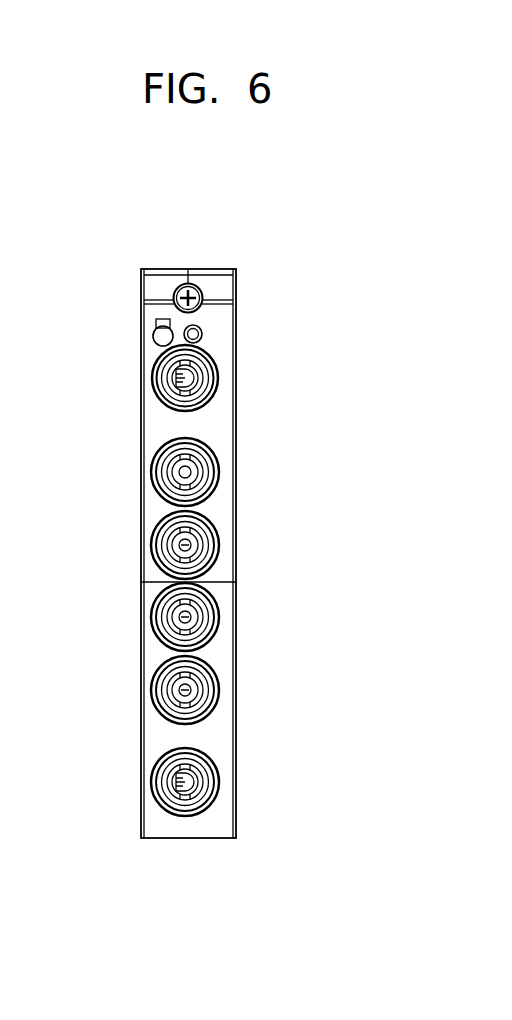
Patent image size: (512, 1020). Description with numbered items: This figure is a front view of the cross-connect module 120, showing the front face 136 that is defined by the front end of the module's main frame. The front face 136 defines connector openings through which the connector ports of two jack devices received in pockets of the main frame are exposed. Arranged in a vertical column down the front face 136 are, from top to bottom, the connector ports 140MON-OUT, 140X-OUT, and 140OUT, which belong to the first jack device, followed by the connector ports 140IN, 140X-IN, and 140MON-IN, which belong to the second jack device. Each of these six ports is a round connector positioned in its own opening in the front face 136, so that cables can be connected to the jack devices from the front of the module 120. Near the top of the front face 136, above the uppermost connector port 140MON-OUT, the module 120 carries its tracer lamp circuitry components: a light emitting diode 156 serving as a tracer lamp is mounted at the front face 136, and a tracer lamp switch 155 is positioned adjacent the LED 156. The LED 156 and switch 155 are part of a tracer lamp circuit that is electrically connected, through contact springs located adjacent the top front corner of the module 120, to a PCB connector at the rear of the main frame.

The cross-connect module 120 is at (243, 253).
The front face 136 is at (215, 738).
The tracer lamp switch 155 is at (162, 335).
The light emitting diode 156 is at (203, 333).
The connector port 140MON-OUT is at (196, 378).
The connector port 140X-OUT is at (193, 472).
The connector port 140OUT is at (196, 543).
The connector port 140IN is at (196, 616).
The connector port 140X-IN is at (196, 690).
The connector port 140MON-IN is at (195, 788).